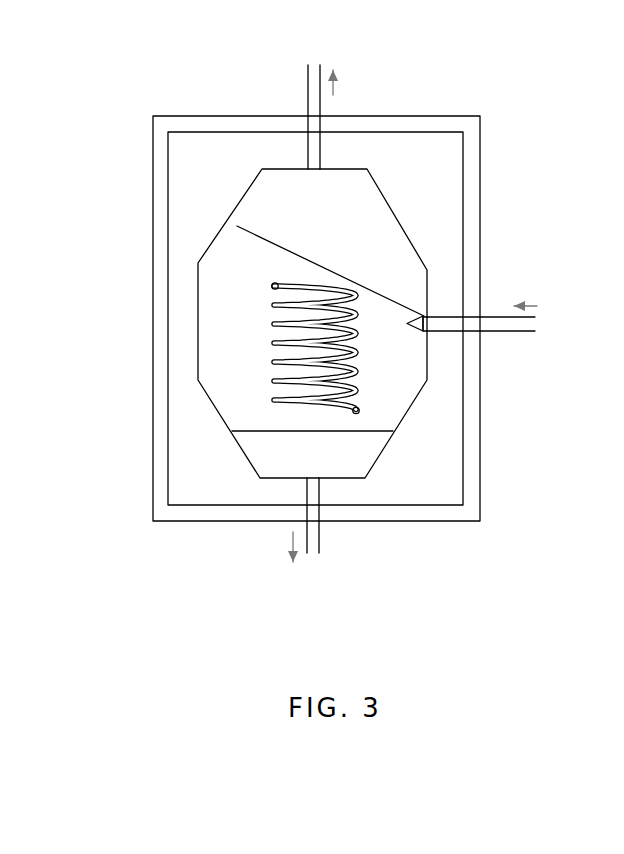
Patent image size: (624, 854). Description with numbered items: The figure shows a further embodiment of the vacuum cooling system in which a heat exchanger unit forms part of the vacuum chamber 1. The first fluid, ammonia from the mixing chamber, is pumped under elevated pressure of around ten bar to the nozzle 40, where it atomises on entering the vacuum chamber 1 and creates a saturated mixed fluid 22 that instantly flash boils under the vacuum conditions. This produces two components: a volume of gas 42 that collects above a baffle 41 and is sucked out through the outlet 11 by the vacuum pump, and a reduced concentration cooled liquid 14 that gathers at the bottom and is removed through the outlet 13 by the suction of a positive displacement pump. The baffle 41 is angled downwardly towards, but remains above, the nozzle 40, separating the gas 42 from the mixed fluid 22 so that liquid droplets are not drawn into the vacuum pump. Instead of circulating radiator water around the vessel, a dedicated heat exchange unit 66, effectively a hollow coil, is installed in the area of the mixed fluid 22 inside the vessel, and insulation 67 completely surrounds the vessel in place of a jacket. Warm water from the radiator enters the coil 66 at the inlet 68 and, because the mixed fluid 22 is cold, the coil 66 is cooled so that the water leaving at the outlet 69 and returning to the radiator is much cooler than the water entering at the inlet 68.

The vacuum chamber 1 is at (227, 116).
The outlet 11 is at (308, 110).
The outlet 13 is at (319, 522).
The cooled liquid 14 is at (312, 450).
The mixed fluid 22 is at (312, 323).
The nozzle 40 is at (428, 332).
The baffle 41 is at (297, 255).
The gas 42 is at (327, 220).
The heat exchange unit 66 is at (277, 365).
The insulation 67 is at (432, 205).
The inlet 68 is at (363, 412).
The outlet 69 is at (257, 287).